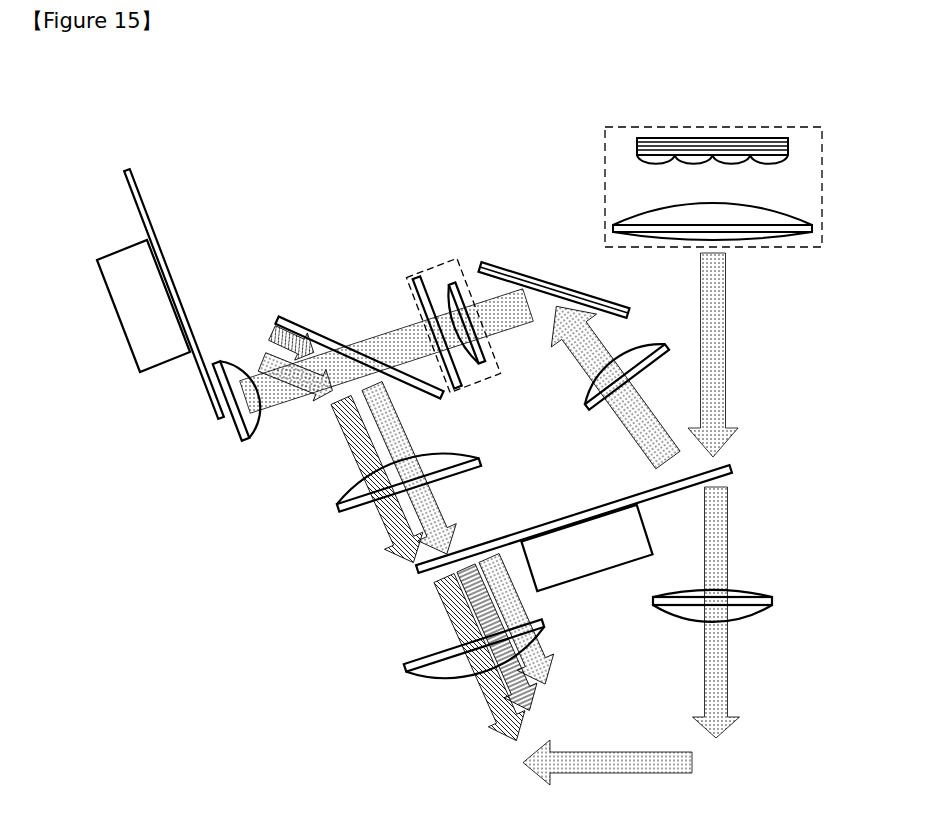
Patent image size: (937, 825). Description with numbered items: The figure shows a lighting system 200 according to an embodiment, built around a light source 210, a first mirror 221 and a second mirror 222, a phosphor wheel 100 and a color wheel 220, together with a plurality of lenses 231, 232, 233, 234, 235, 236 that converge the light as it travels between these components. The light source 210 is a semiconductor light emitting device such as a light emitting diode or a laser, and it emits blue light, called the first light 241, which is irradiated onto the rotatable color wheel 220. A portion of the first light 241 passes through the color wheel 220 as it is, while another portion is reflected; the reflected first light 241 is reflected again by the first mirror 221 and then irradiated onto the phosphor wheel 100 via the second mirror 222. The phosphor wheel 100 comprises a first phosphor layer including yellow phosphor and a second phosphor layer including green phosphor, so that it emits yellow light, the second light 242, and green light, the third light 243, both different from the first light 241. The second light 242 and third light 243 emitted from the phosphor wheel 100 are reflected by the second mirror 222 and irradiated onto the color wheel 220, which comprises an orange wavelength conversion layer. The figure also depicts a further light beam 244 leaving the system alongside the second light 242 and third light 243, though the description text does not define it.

The phosphor wheel 100 is at (108, 338).
The lighting system 200 is at (143, 83).
The light source 210 is at (822, 173).
The color wheel 220 is at (618, 596).
The first mirror 221 is at (503, 267).
The second mirror 222 is at (308, 330).
The lens 231 is at (590, 390).
The lens 232 is at (755, 595).
The lens 233 is at (493, 383).
The lens 234 is at (228, 365).
The lens 235 is at (338, 508).
The lens 236 is at (435, 682).
The first light 241 is at (388, 348).
The second light 242 is at (322, 353).
The third light 243 is at (270, 343).
The third reflected light 244 is at (523, 698).